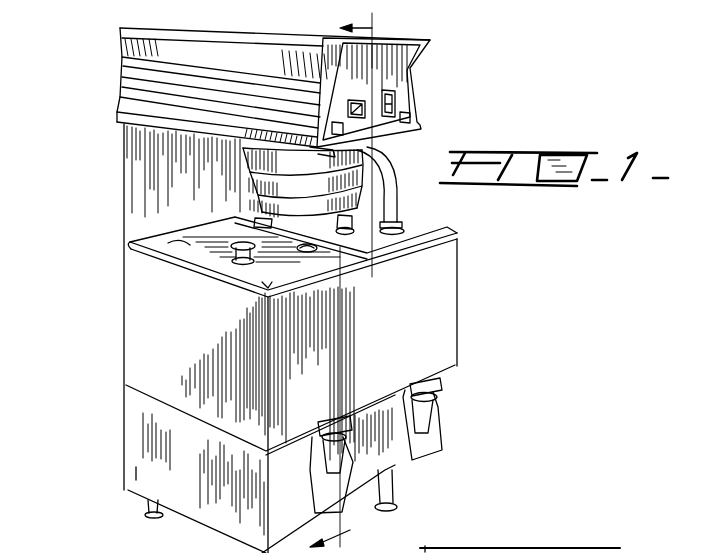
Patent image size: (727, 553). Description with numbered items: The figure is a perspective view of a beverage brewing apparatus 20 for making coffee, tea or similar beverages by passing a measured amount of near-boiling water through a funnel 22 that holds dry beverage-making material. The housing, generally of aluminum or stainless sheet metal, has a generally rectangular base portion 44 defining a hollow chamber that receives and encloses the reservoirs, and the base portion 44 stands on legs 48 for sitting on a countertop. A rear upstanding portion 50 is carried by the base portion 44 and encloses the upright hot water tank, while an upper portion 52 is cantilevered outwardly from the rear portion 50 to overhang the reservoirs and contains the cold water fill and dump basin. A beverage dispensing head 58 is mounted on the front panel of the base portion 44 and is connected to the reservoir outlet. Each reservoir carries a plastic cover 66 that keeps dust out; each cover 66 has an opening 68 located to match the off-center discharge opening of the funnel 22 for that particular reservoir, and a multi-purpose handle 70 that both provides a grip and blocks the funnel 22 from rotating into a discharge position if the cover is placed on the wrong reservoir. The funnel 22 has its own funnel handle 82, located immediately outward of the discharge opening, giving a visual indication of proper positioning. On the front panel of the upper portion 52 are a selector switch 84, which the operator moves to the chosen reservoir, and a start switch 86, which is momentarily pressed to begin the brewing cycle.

The beverage brewing apparatus 20 is at (438, 138).
The funnel 22 is at (347, 178).
The base portion 44 is at (430, 333).
The legs 48 is at (389, 492).
The rear upstanding portion 50 is at (125, 195).
The upper portion 52 is at (146, 87).
The beverage dispensing head 58 is at (422, 414).
The cover 66 is at (130, 245).
The opening 68 is at (304, 252).
The handle 70 is at (238, 258).
The funnel handle 82 is at (385, 162).
The selector switch 84 is at (348, 107).
The start switch 86 is at (393, 100).